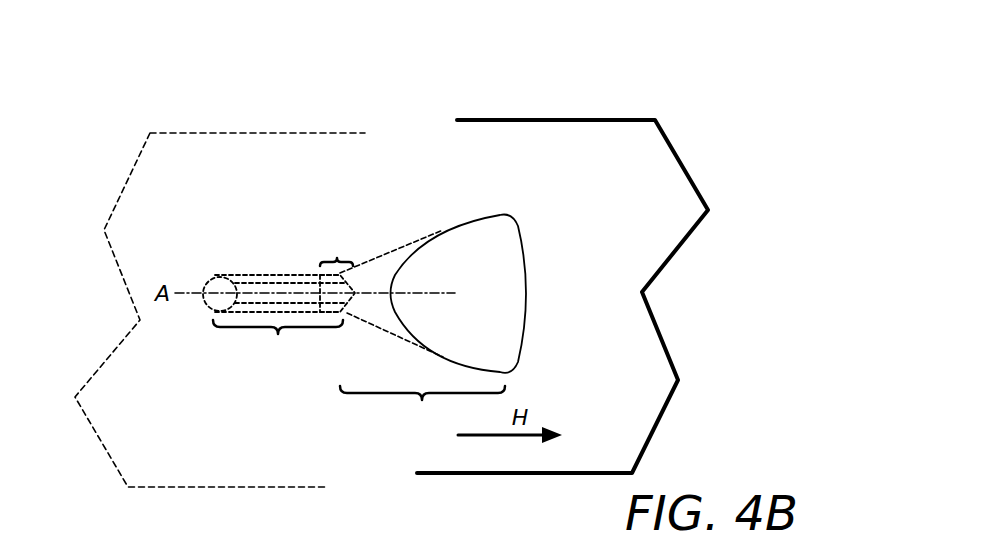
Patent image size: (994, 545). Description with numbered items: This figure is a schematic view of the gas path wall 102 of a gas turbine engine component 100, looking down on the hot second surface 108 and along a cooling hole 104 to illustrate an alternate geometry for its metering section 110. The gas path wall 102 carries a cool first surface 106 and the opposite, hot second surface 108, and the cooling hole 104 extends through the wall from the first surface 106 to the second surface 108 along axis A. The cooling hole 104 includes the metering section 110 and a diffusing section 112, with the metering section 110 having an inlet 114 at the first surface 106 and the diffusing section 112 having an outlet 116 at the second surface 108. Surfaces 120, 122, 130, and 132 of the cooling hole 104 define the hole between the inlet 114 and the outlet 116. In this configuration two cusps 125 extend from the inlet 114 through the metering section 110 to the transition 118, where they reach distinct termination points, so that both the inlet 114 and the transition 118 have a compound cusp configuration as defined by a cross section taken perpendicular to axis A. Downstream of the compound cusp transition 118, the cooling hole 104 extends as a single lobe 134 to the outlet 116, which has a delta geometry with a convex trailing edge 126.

The gas turbine engine component 100 is at (134, 88).
The gas path wall 102 is at (353, 465).
The cooling hole 104 is at (258, 392).
The first surface 106 is at (128, 177).
The second surface 108 is at (684, 168).
The metering section 110 is at (278, 346).
The diffusing section 112 is at (422, 407).
The inlet 114 is at (215, 277).
The outlet 116 is at (463, 220).
The transition 118 is at (336, 266).
The surface 120 is at (397, 267).
The surface 122 is at (459, 307).
The cusps 125 is at (269, 286).
The convex trailing edge 126 is at (528, 270).
The surface 130 is at (292, 273).
The surface 132 is at (248, 313).
The single lobe 134 is at (498, 225).